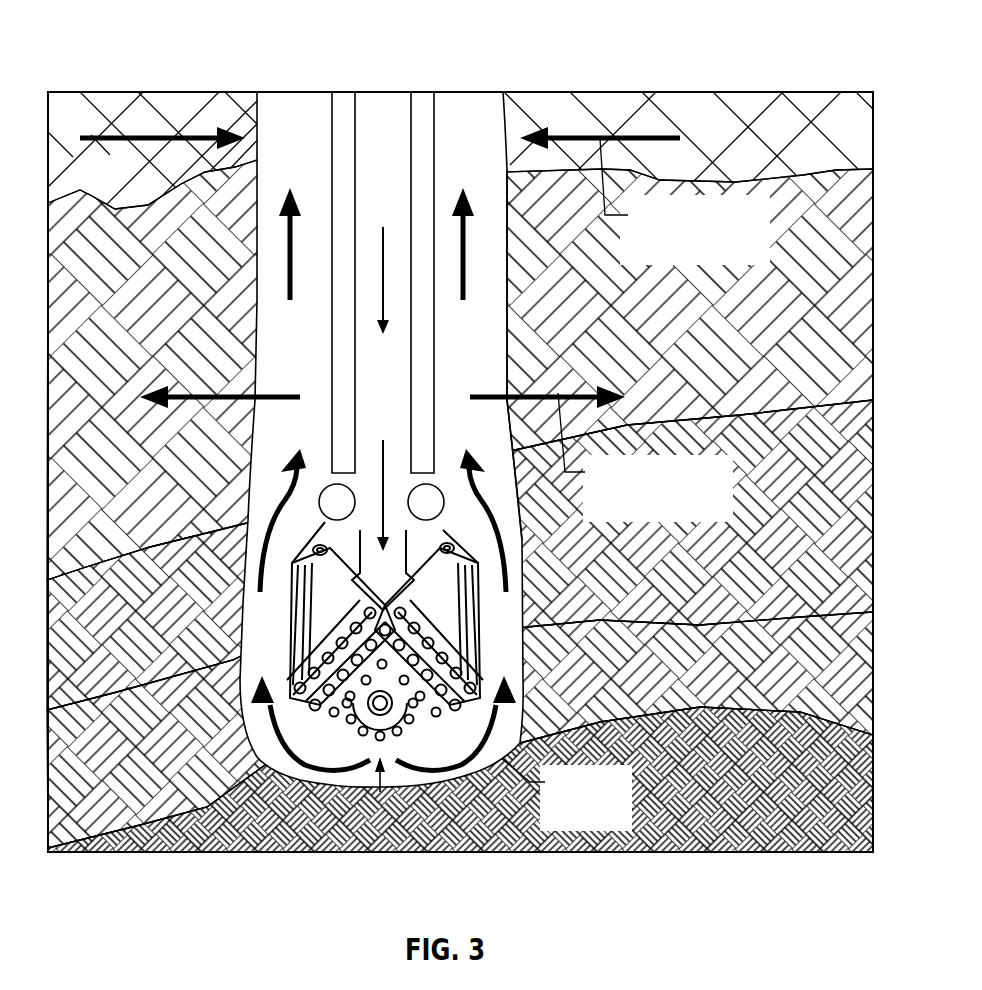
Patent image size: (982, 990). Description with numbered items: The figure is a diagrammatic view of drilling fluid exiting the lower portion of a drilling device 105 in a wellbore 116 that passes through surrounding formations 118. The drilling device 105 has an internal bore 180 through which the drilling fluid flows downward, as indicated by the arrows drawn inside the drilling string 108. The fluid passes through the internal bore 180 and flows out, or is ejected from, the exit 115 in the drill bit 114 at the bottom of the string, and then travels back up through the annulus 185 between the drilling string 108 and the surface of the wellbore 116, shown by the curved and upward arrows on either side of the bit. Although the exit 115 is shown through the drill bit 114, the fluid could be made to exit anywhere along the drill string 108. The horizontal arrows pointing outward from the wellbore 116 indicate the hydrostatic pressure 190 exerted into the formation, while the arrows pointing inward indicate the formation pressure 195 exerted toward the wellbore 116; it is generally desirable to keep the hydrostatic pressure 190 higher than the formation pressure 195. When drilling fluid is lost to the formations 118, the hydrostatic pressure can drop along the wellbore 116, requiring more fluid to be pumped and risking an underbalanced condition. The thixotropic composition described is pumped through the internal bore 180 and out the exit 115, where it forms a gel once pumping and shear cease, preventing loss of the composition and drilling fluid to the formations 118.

The drilling device 105 is at (262, 348).
The drilling string 108 is at (423, 110).
The drill bit 114 is at (293, 632).
The exit 115 is at (390, 792).
The wellbore 116 is at (507, 322).
The formations 118 is at (685, 328).
The internal bore 180 is at (387, 110).
The annulus 185 is at (305, 110).
The hydrostatic pressure 190 is at (528, 392).
The formation pressure 195 is at (638, 138).